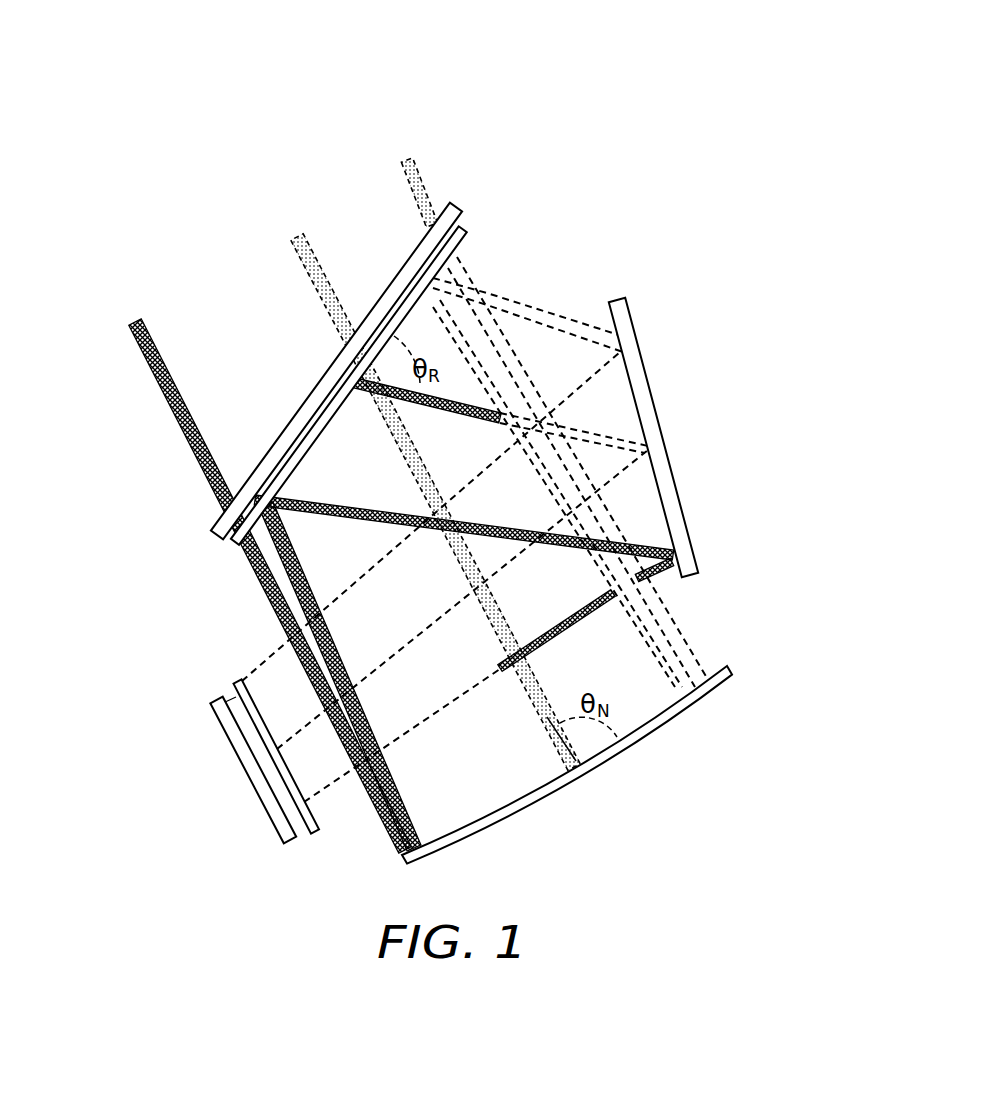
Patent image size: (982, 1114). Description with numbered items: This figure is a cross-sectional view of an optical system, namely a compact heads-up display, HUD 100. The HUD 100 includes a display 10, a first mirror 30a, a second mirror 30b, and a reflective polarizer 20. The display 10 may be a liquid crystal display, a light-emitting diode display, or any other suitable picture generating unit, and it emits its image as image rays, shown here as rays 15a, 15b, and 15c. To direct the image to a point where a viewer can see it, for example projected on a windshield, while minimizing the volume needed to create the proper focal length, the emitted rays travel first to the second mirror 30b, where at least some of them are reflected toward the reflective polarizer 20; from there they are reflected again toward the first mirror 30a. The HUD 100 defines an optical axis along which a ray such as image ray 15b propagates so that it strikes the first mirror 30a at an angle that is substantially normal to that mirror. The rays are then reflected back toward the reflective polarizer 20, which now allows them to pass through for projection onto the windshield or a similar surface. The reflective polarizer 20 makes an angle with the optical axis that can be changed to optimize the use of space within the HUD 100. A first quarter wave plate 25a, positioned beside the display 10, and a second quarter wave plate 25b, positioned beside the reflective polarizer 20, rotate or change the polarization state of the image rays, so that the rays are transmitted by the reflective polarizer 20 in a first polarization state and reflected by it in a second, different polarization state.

The HUD 100 is at (245, 158).
The display 10 is at (252, 794).
The ray 15a is at (380, 563).
The image ray 15b is at (433, 627).
The ray 15c is at (486, 690).
The reflective polarizer 20 is at (460, 204).
The first quarter wave plate 25a is at (236, 681).
The second quarter wave plate 25b is at (470, 226).
The first mirror 30a is at (722, 665).
The second mirror 30b is at (658, 418).